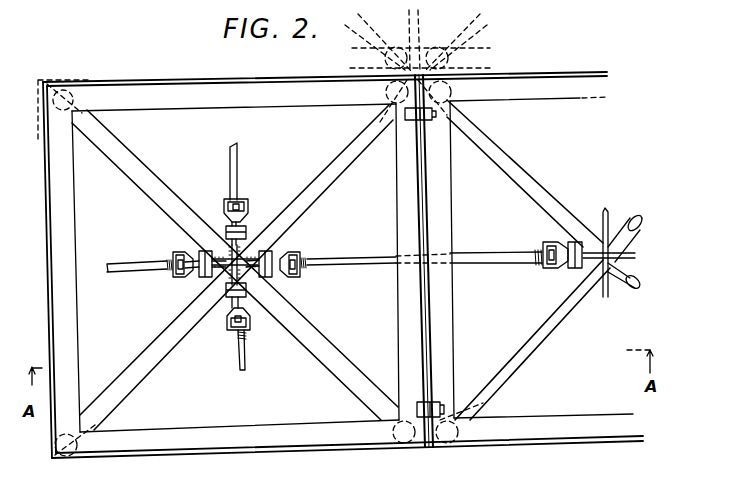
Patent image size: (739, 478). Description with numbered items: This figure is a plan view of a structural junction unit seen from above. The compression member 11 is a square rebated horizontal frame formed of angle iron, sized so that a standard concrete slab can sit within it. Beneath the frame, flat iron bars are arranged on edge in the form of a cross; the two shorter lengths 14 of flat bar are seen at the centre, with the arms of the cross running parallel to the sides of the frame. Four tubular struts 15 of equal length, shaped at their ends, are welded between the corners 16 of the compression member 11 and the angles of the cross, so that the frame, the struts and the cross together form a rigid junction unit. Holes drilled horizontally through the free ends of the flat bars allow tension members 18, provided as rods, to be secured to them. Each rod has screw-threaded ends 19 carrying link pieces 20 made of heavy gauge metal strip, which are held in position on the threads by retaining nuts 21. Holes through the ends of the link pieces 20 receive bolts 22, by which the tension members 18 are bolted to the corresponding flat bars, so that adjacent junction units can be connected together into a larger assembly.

The compression member 11 is at (38, 201).
The shorter lengths of flat iron bar 14 is at (238, 243).
The tubular struts 15 is at (136, 168).
The corners 16 is at (64, 97).
The tension members 18 is at (238, 168).
The ends 19 is at (166, 270).
The link pieces 20 is at (245, 206).
The retaining nuts 21 is at (188, 273).
The bolts 22 is at (266, 247).